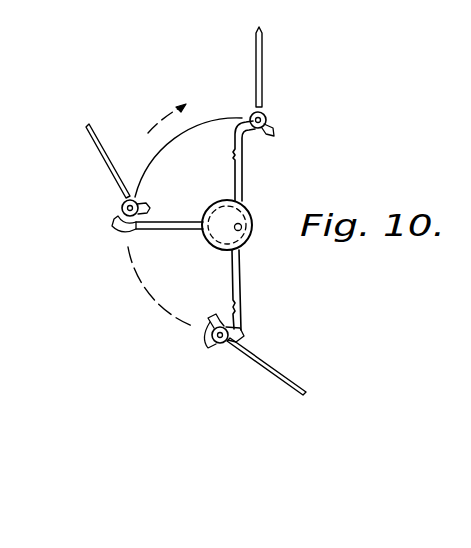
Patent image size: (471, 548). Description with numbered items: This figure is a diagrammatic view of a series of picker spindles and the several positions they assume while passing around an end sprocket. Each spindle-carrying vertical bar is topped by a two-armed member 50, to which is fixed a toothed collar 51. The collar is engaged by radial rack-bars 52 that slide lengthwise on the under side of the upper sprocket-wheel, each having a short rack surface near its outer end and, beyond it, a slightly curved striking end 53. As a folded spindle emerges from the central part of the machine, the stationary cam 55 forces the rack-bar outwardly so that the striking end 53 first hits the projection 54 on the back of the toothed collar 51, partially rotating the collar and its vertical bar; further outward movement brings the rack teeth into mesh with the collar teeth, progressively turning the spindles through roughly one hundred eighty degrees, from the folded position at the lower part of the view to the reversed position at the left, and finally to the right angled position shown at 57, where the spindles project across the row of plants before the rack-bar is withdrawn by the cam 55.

The two-armed member 50 is at (206, 337).
The toothed collar 51 is at (133, 201).
The radial rack-bar 52 is at (181, 222).
The striking end 53 is at (121, 228).
The projection 54 is at (229, 346).
The cam 55 is at (249, 216).
The right angled position 57 is at (280, 67).